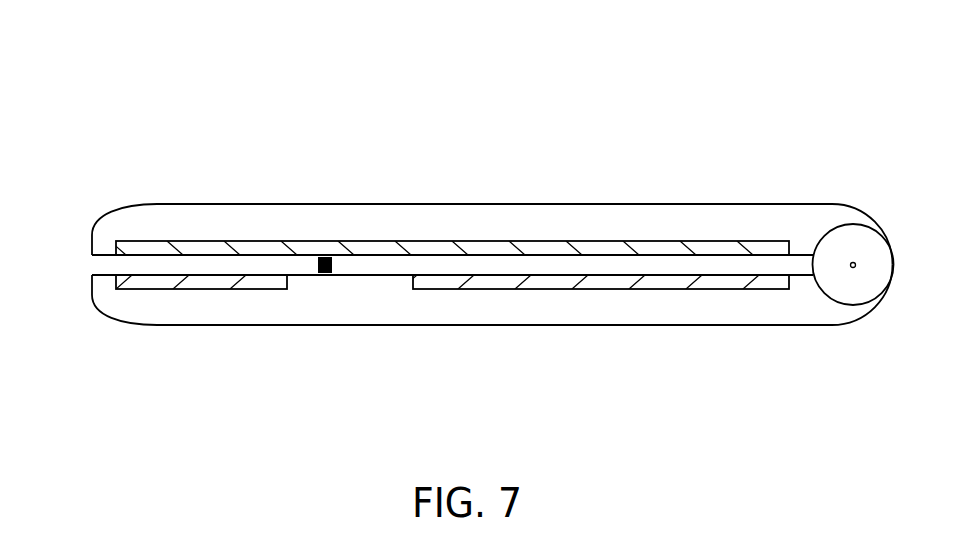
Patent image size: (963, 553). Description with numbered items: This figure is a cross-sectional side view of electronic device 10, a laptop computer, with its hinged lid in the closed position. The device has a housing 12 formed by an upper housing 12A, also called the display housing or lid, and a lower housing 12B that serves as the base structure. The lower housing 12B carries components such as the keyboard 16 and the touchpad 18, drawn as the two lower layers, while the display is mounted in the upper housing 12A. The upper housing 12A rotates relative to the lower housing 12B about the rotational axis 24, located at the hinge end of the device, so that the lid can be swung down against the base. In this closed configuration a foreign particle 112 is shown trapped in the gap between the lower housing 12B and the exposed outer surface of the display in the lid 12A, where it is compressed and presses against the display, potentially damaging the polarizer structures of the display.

The electronic device 10 is at (662, 74).
The housing 12 is at (67, 195).
The upper housing 12A is at (213, 204).
The lower housing 12B is at (353, 300).
The keyboard 16 is at (607, 290).
The touchpad 18 is at (203, 290).
The rotational axis 24 is at (857, 265).
The particle 112 is at (332, 262).